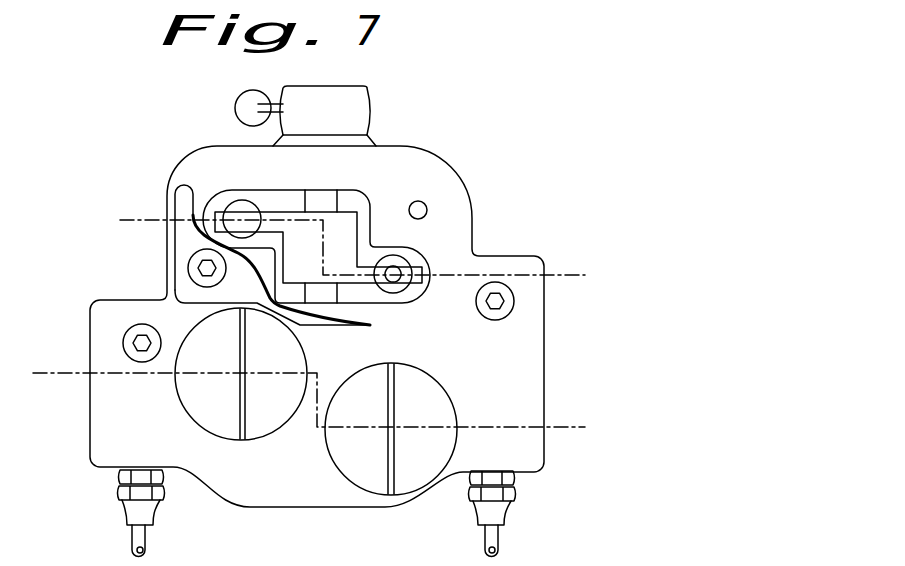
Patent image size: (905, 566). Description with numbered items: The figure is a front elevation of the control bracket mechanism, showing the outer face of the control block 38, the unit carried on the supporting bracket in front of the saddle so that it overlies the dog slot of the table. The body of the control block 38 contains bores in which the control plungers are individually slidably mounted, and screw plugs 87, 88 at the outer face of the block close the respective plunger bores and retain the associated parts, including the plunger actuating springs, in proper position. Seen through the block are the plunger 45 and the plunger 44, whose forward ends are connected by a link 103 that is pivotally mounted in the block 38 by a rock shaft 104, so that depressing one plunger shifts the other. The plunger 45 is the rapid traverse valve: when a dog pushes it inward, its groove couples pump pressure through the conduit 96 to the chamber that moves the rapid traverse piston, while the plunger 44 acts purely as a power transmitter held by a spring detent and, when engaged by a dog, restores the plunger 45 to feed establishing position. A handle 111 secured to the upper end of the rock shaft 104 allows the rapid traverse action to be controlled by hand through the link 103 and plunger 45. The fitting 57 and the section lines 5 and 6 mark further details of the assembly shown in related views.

The control block 38 is at (528, 368).
The plunger 44 is at (233, 204).
The plunger 45 is at (407, 261).
The fuel fitting 57 is at (148, 536).
The screw plug 87 is at (205, 418).
The screw plug 88 is at (340, 470).
The conduit 96 is at (500, 538).
The link 103 is at (365, 280).
The rock shaft 104 is at (313, 203).
The handle 111 is at (242, 100).
The section line 5- 5 is at (585, 420).
The section line 6- 6 is at (585, 268).